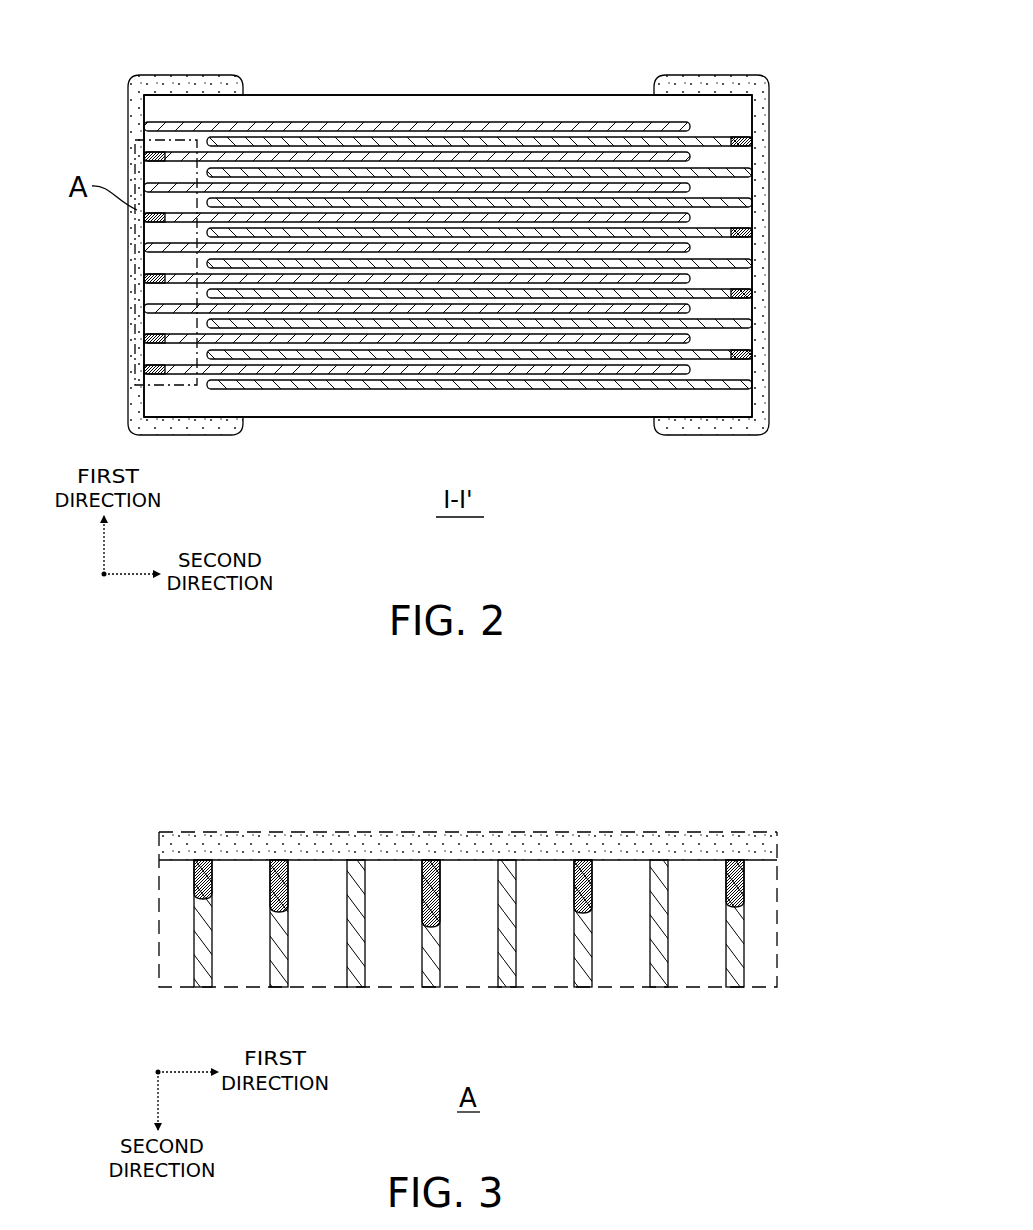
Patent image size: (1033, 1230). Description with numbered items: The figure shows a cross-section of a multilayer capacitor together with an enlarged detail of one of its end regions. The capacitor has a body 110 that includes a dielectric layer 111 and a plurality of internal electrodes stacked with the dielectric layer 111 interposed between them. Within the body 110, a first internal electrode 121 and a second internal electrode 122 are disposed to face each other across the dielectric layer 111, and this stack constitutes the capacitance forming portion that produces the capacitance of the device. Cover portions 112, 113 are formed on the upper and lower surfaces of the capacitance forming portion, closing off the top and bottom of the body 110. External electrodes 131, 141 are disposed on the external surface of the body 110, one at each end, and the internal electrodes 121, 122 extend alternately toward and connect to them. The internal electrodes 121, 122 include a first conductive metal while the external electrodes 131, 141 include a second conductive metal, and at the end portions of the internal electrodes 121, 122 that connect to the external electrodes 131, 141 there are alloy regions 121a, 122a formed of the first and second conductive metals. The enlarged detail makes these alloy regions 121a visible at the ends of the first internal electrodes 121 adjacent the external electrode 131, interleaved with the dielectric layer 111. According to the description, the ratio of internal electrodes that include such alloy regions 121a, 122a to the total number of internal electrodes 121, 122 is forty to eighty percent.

In FIG. 2, the body 110 is at (510, 95).
In FIG. 2, the dielectric layer 111 is at (352, 135).
In FIG. 3, the dielectric layer 111 is at (620, 978).
In FIG. 2, the cover portion 112 is at (586, 107).
In FIG. 2, the cover portion 113 is at (587, 402).
In FIG. 2, the first internal electrode 121 is at (297, 125).
In FIG. 3, the first internal electrode 121 is at (581, 978).
In FIG. 2, the alloy region 121a is at (150, 368).
In FIG. 3, the alloy region 121a is at (583, 862).
In FIG. 2, the second internal electrode 122 is at (402, 142).
In FIG. 2, the alloy region 122a is at (742, 352).
In FIG. 2, the external electrode 131 is at (190, 78).
In FIG. 3, the external electrode 131 is at (466, 846).
In FIG. 2, the external electrode 141 is at (705, 78).